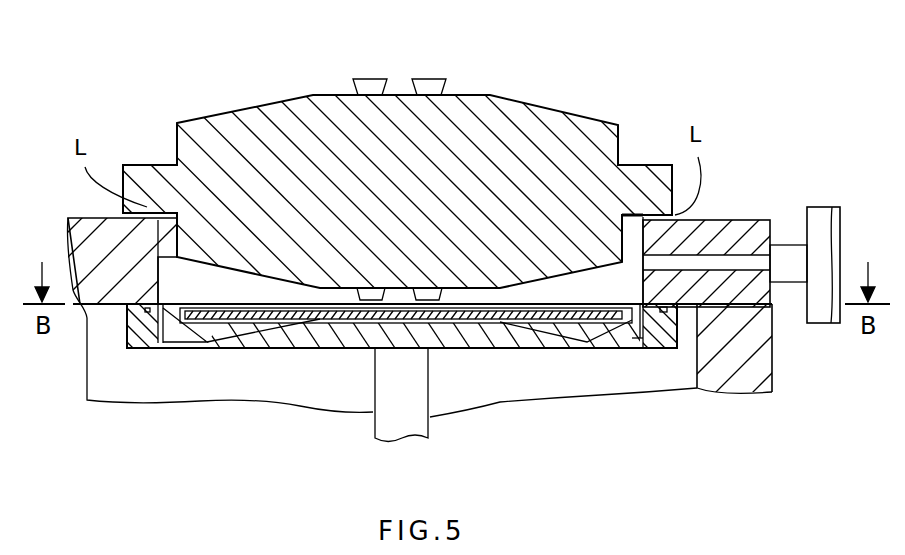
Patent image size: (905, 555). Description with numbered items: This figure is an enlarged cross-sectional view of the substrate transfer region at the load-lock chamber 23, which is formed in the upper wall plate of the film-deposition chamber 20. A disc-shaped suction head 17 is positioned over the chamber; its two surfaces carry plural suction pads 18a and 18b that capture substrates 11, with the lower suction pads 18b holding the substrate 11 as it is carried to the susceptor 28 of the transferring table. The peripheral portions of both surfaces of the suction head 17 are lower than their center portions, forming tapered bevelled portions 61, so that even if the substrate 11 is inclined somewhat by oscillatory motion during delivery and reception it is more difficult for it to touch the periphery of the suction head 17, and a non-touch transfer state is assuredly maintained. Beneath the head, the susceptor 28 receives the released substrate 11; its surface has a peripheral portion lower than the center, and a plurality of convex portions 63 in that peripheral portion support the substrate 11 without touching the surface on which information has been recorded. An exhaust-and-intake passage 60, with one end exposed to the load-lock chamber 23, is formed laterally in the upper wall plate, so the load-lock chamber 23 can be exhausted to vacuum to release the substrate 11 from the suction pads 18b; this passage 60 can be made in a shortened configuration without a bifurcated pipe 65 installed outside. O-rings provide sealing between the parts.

The bevelled portion 61 is at (247, 105).
The suction head 17 is at (482, 105).
The suction pads 18a is at (425, 77).
The suction pads 18b is at (442, 295).
The load-lock chamber 23 is at (197, 288).
The convex portions 63 is at (180, 330).
The susceptor 28 is at (350, 350).
The substrate 11 is at (570, 313).
The exhaust-and-intake passage 60 is at (712, 262).
The bifurcated pipe 65 is at (835, 207).
The film-deposition chamber 20 is at (747, 377).